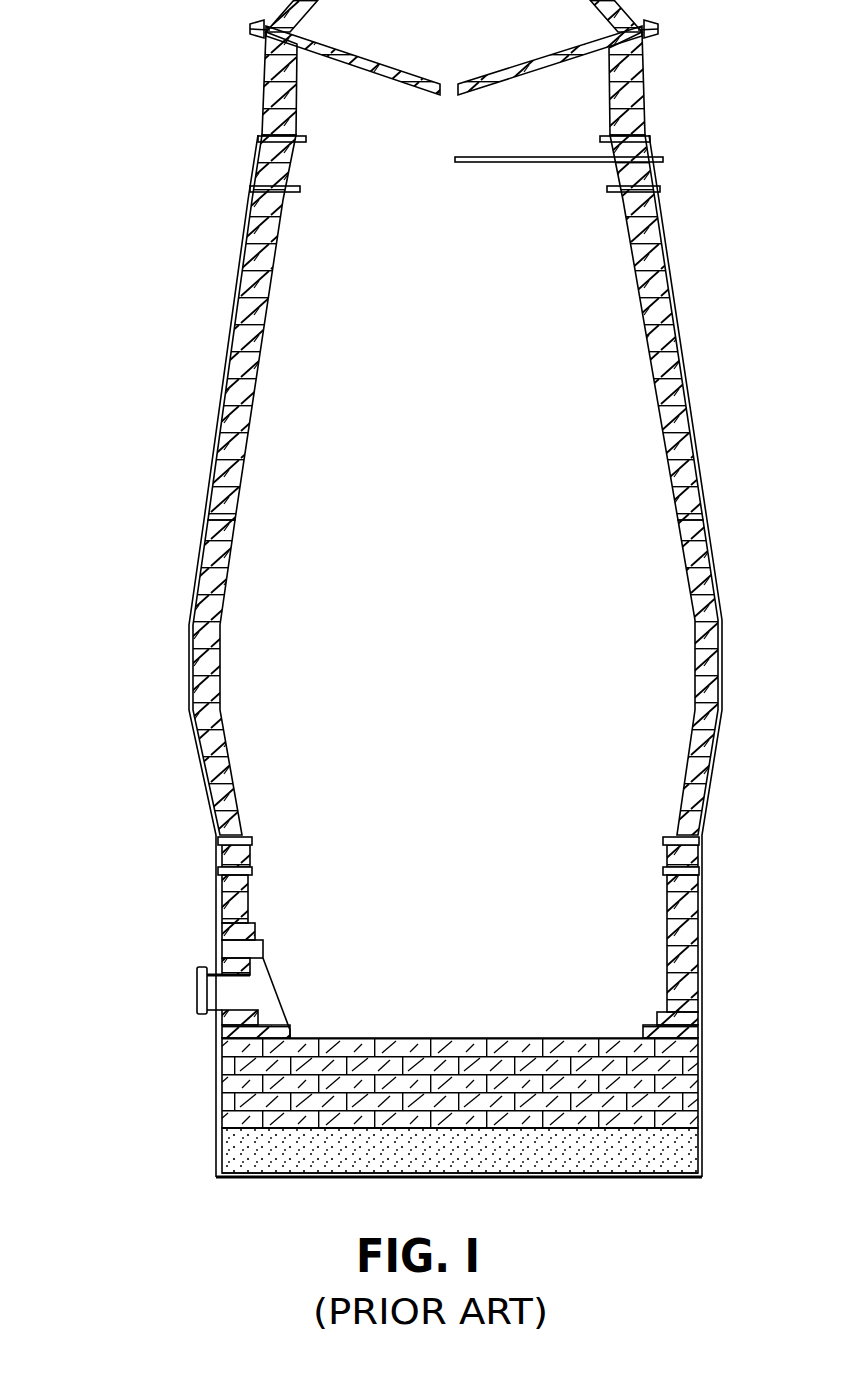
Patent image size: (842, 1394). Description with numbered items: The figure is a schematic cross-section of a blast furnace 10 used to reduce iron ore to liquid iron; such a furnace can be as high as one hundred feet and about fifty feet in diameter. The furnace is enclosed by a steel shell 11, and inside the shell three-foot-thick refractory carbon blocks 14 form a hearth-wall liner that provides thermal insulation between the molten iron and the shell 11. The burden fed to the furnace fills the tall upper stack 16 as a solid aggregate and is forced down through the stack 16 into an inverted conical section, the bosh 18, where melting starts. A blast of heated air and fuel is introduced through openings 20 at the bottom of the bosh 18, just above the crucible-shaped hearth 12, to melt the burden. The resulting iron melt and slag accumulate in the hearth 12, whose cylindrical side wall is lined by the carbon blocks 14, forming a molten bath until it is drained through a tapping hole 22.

The blast furnace 10 is at (132, 108).
The steel shell 11 is at (220, 945).
The hearth 12 is at (188, 1077).
The refractory carbon blocks 14 is at (232, 918).
The stack 16 is at (240, 320).
The bosh 18 is at (208, 750).
The openings 20 is at (222, 850).
The tapping hole 22 is at (215, 995).